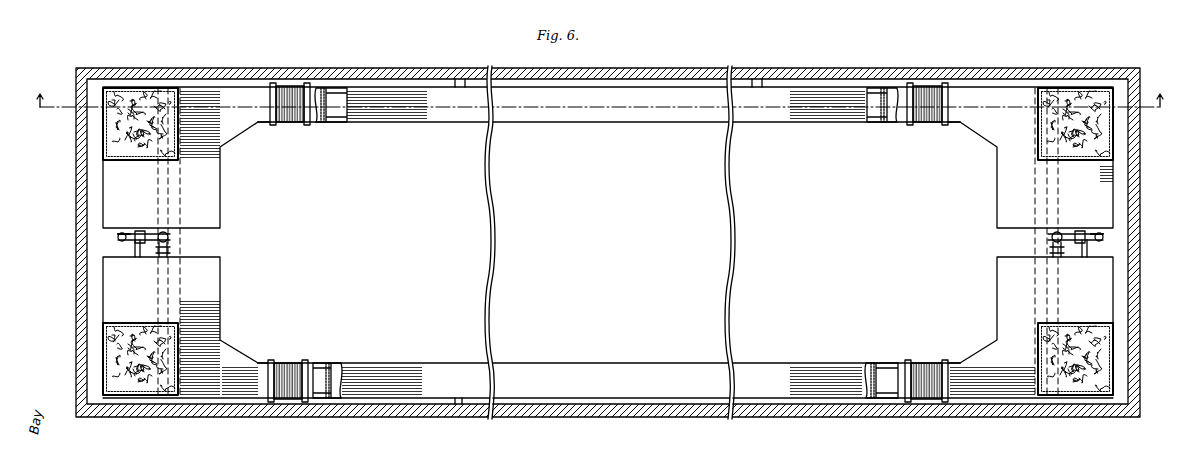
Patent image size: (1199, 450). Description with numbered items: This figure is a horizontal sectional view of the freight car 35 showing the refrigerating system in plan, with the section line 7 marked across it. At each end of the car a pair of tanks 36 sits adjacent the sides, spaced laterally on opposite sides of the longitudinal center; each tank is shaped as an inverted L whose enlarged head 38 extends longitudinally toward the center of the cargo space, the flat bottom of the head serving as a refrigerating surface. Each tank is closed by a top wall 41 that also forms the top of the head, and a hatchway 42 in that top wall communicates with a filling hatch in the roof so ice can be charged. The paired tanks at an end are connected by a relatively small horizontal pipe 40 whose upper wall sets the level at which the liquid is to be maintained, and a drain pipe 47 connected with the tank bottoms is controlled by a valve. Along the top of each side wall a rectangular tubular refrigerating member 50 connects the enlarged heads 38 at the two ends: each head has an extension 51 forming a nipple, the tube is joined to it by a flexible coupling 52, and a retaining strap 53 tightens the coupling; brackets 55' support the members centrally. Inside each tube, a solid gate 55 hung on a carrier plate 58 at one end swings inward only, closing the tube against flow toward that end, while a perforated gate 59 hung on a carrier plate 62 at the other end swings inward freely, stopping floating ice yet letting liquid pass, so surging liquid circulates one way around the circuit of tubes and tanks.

The section line 7- 7 is at (600, 113).
The freight car 35 is at (412, 410).
The tank 36 is at (997, 183).
The enlarged head 38 is at (220, 212).
The horizontal pipe 40 is at (160, 252).
The top wall 41 is at (185, 192).
The hatchway 42 is at (185, 138).
The drain pipe 47 is at (118, 247).
The tubular refrigerating member 50 is at (600, 113).
The extension 51 is at (258, 127).
The flexible coupling 52 is at (290, 125).
The retaining strap 53 is at (306, 83).
The solid gate 55 is at (605, 264).
The pin 55' is at (614, 91).
The carrier plate 58 is at (880, 122).
The perforated gate 59 is at (328, 123).
The carrier plate 62 is at (328, 88).